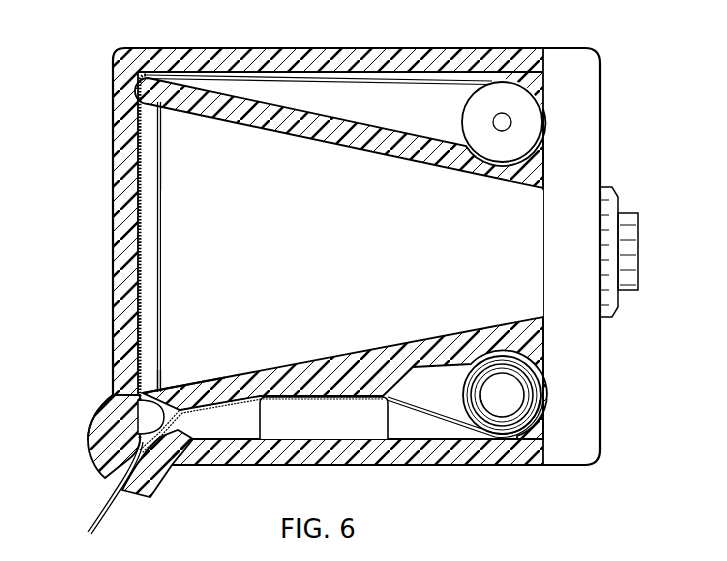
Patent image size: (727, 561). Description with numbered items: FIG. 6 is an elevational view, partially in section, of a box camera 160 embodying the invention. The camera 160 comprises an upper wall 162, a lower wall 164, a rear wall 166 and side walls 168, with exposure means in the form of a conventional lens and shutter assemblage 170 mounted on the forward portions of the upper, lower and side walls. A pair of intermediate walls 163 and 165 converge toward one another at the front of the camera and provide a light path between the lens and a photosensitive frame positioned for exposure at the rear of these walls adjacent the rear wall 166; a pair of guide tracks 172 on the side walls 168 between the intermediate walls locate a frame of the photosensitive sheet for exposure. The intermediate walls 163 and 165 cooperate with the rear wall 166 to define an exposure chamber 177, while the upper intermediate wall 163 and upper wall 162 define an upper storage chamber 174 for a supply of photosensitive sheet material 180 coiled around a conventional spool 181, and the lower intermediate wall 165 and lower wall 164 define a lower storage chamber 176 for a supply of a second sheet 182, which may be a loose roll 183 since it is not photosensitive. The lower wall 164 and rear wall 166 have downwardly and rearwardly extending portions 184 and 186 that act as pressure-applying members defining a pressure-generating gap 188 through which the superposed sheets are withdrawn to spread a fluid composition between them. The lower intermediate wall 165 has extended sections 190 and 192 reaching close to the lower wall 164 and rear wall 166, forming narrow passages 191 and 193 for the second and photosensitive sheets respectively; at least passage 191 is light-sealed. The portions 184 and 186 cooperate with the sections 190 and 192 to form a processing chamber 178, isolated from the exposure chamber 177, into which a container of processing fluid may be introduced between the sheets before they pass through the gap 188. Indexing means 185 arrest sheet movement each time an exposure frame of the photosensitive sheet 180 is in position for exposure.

The box camera 160 is at (355, 49).
The upper wall 162 is at (288, 48).
The upper intermediate wall 163 is at (290, 113).
The lower wall 164 is at (300, 456).
The lower intermediate wall 165 is at (305, 362).
The rear wall 166 is at (120, 213).
The side walls 168 is at (353, 213).
The lens and shutter assemblage 170 is at (603, 165).
The guide tracks 172 is at (160, 197).
The upper storage chamber 174 is at (435, 107).
The lower storage chamber 176 is at (430, 400).
The exposure chamber 177 is at (185, 282).
The processing chamber 178 is at (98, 427).
The photosensitive sheet material 180 is at (353, 82).
The spool 181 is at (517, 108).
The second sheet 182 is at (455, 421).
The loose roll 183 is at (486, 386).
The downwardly extending portion of lower wall 184 is at (147, 496).
The indexing means 185 is at (330, 426).
The rearwardly extending portion of rear wall 186 is at (103, 448).
The pressure-generating gap 188 is at (110, 487).
The extended section of lower intermediate wall 190 is at (203, 393).
The narrow passage 191 is at (185, 471).
The extended section of lower intermediate wall 192 is at (165, 391).
The narrow passage 193 is at (128, 405).